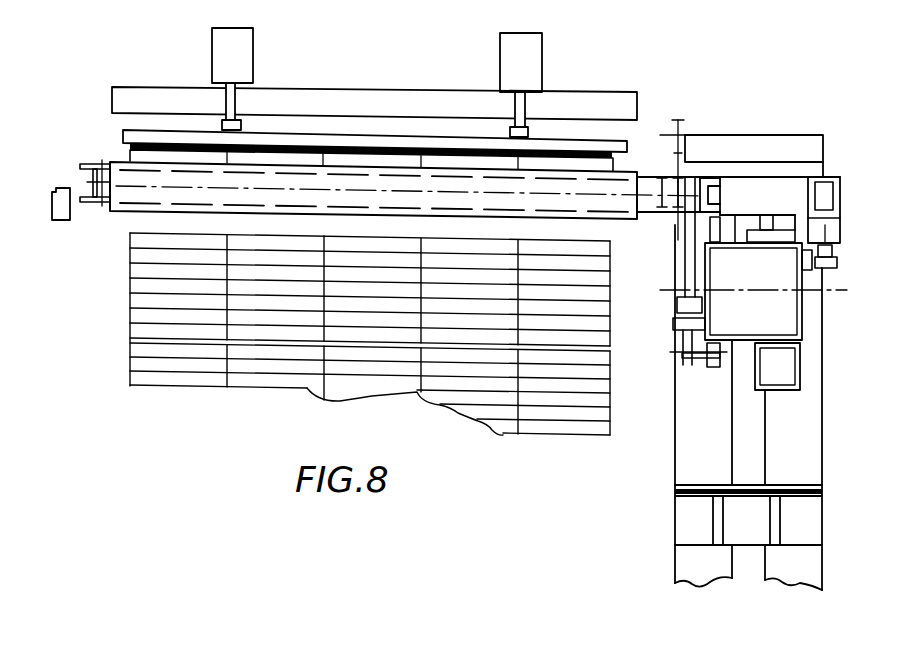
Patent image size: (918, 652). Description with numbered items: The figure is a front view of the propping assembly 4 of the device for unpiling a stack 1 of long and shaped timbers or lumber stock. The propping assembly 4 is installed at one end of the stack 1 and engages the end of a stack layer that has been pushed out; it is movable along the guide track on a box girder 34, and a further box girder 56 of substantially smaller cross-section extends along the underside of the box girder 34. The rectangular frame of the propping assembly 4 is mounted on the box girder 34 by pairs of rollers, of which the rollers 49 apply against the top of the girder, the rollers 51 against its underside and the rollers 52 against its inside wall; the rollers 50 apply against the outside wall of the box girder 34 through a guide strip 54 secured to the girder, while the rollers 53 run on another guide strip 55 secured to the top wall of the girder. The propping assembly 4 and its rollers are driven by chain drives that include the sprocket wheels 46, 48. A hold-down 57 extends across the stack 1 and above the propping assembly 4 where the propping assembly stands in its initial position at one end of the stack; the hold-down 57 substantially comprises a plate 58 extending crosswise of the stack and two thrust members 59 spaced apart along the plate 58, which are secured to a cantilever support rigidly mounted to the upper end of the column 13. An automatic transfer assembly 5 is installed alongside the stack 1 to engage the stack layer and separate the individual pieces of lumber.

The stack 1 is at (362, 319).
The propping assembly 4 is at (98, 160).
The automatic transfer assembly 5 is at (70, 220).
The column 13 is at (668, 488).
The box girder 34 is at (728, 313).
The sprocket wheel 46 is at (676, 136).
The sprocket wheel 48 is at (680, 192).
The rollers 49 is at (700, 236).
The rollers 50 is at (823, 268).
The rollers 51 is at (713, 360).
The rollers 52 is at (685, 325).
The rollers 53 is at (765, 215).
The guide strip 54 is at (803, 261).
The guide strip 55 is at (783, 235).
The box girder 56 is at (768, 368).
The hold-down 57 is at (122, 129).
The plate 58 is at (405, 147).
The thrust members 59 is at (532, 78).